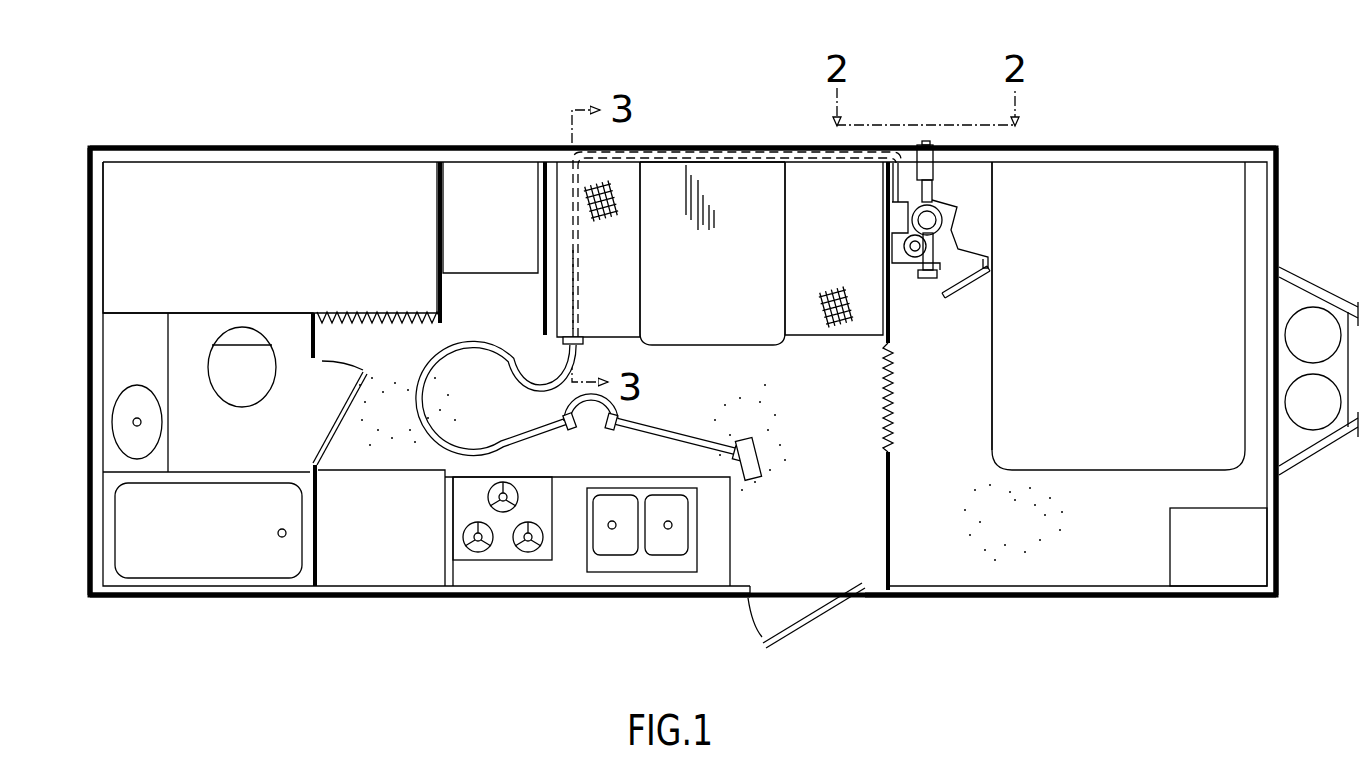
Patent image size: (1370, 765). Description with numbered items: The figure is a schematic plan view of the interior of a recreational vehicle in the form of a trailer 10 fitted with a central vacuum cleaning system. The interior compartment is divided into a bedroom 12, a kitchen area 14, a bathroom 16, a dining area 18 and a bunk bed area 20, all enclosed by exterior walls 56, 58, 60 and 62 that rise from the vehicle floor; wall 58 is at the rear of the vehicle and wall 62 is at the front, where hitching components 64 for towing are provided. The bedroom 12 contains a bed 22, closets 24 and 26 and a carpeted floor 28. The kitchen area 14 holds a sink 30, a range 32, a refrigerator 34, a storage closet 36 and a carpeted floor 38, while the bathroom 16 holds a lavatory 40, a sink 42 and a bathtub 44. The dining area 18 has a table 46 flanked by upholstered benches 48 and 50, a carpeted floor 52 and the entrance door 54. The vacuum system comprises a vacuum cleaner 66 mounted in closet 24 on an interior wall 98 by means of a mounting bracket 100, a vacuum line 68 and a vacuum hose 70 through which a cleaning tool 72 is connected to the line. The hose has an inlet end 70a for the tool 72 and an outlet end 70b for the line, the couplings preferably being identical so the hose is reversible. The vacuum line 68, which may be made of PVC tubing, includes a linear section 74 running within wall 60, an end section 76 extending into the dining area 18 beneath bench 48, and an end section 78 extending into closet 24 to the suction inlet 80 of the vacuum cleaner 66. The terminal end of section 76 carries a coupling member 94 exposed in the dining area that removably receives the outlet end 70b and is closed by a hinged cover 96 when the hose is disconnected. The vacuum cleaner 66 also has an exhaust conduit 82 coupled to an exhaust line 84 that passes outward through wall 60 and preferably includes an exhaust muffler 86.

The trailer 10 is at (463, 100).
The bedroom 12 is at (1098, 542).
The kitchen area 14 is at (560, 590).
The bathroom 16 is at (231, 552).
The dining area 18 is at (732, 180).
The bunk bed area 20 is at (275, 192).
The bed 22 is at (1137, 317).
The closet 24 is at (985, 210).
The closet 26 is at (1253, 543).
The carpeted floor 28 is at (1027, 531).
The sink 30 is at (656, 546).
The range 32 is at (505, 545).
The refrigerator 34 is at (383, 575).
The storage closet 36 is at (495, 175).
The carpeted floor 38 is at (402, 420).
The lavatory 40 is at (240, 360).
The sink 42 is at (152, 410).
The bathtub 44 is at (172, 563).
The table 46 is at (727, 259).
The upholstered bench 48 is at (625, 259).
The upholstered bench 50 is at (842, 262).
The carpeted floor 52 is at (785, 388).
The entrance door 54 is at (810, 624).
The exterior wall 56 is at (602, 605).
The exterior wall 58 is at (104, 265).
The exterior wall 60 is at (402, 146).
The exterior wall 62 is at (1283, 232).
The hitching components 64 is at (1350, 310).
The vacuum cleaner 66 is at (946, 220).
The vacuum line 68 is at (695, 143).
The vacuum hose 70 is at (578, 375).
The inlet end 70a is at (553, 432).
The outlet end 70b is at (597, 336).
The cleaning tool 72 is at (655, 428).
The linear section 74 is at (770, 157).
The end section 76 is at (575, 310).
The end section 78 is at (892, 181).
The suction inlet 80 is at (935, 243).
The exhaust conduit 82 is at (932, 203).
The exhaust line 84 is at (934, 192).
The exhaust muffler 86 is at (928, 157).
The coupling member 94 is at (600, 334).
The hinged cover 96 is at (583, 353).
The interior wall 98 is at (883, 237).
The mounting bracket 100 is at (882, 218).